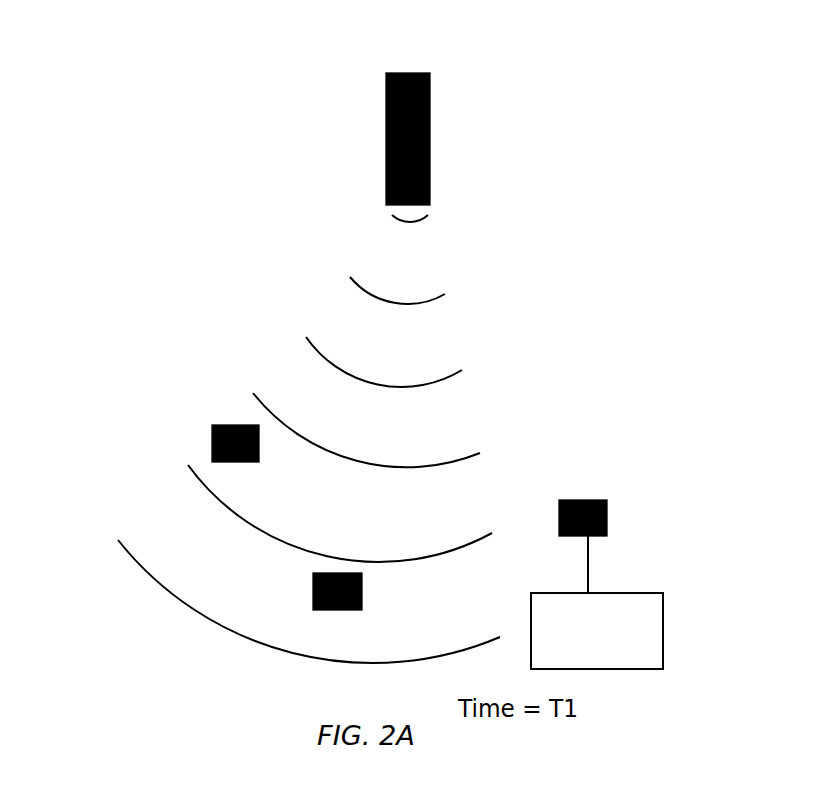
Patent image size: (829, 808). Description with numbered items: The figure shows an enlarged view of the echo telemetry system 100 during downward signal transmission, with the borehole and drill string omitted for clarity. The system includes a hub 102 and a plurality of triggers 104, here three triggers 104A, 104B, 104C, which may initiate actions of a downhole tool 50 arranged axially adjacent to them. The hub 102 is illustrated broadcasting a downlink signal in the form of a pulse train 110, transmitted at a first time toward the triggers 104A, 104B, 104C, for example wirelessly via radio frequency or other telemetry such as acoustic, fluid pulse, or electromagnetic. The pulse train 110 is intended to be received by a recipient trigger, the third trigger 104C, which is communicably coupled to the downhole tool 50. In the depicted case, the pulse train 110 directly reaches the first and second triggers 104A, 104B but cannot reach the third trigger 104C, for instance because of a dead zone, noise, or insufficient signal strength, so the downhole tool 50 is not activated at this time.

The echo telemetry system 100 is at (326, 40).
The hub 102 is at (429, 79).
The pulse train 110 is at (447, 377).
The triggers 104 is at (130, 397).
The first trigger 104A is at (210, 446).
The second trigger 104B is at (313, 602).
The third trigger 104C is at (607, 529).
The downhole tool 50 is at (635, 630).